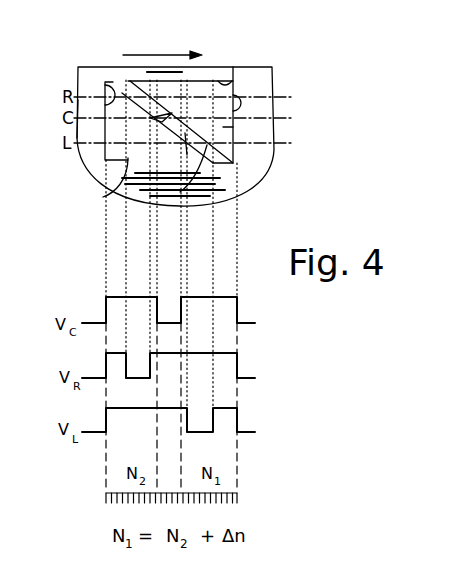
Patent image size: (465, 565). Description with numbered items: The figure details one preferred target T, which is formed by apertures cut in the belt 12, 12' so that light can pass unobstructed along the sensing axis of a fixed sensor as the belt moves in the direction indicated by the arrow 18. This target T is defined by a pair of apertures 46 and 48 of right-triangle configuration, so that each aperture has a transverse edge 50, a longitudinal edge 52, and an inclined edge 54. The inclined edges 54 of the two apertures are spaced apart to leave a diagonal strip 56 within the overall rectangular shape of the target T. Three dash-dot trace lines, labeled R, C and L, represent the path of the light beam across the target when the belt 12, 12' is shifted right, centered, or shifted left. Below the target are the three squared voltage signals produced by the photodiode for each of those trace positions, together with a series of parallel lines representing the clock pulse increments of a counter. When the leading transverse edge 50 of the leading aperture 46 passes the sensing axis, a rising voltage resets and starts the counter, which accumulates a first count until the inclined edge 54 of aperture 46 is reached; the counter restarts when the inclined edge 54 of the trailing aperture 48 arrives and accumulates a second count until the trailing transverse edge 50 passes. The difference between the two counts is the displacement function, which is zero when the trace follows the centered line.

The belt 12 is at (192, 106).
The belt 12' is at (230, 95).
The arrow 18 is at (168, 55).
The leading aperture 46 is at (223, 127).
The trailing aperture 48 is at (85, 171).
The transverse edge 50 is at (122, 97).
The longitudinal edge 52 is at (236, 69).
The inclined edge 54 is at (172, 113).
The diagonal strip 56 is at (190, 194).
The target T is at (246, 163).